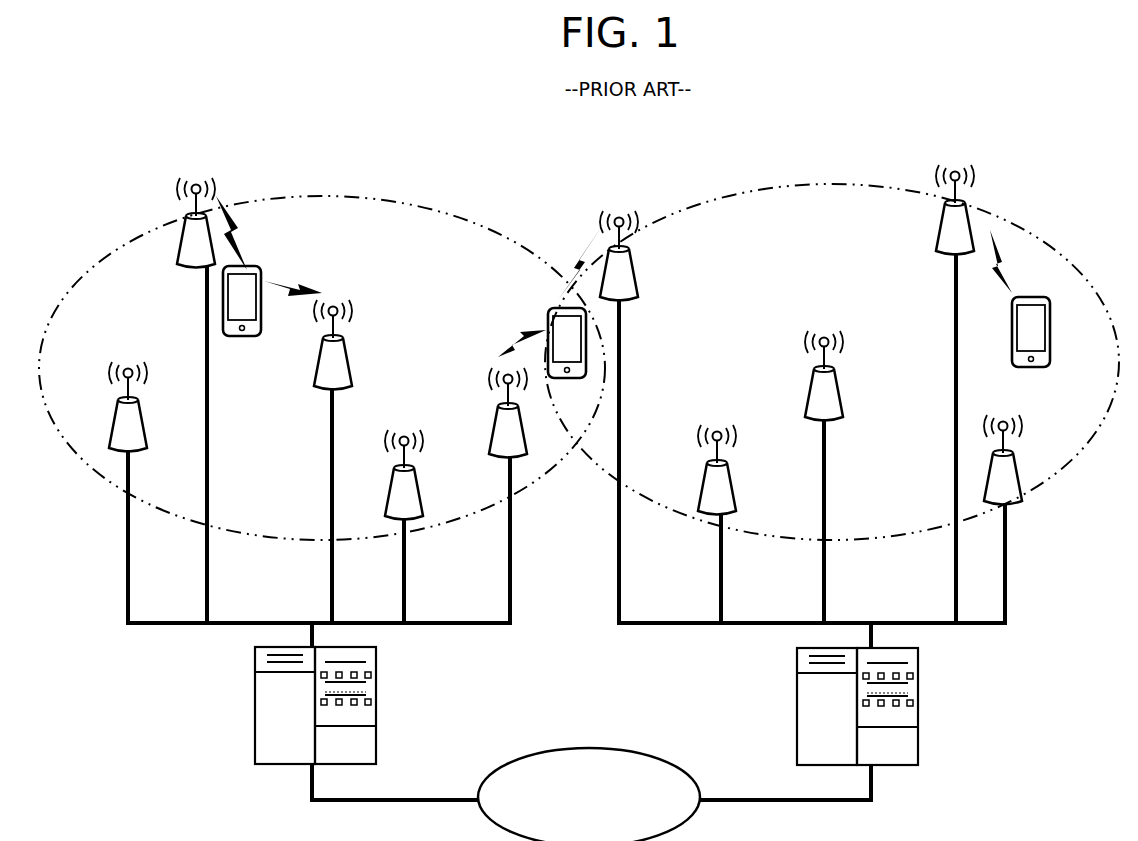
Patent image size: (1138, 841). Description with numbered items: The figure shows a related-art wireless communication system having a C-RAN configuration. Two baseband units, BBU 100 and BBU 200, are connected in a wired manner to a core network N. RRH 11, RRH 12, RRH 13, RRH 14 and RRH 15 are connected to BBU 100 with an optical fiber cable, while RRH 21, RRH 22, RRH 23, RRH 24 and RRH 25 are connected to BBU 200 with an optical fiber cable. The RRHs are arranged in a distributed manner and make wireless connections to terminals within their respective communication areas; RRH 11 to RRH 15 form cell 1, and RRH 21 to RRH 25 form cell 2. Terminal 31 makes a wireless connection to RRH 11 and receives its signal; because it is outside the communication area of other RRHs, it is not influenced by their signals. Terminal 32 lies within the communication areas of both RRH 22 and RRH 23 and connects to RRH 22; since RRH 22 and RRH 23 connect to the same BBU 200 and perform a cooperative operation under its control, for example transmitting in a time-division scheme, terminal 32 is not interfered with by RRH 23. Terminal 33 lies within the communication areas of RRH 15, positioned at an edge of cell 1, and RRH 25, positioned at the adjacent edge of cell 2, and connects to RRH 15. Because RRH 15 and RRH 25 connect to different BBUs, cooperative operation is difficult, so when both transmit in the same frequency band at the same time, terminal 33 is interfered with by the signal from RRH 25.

The cell 1 is at (1072, 259).
The cell 2 is at (398, 198).
The RRH 11 is at (974, 203).
The RRH 12 is at (1018, 457).
The RRH 13 is at (841, 377).
The RRH 14 is at (732, 471).
The RRH 15 is at (640, 271).
The RRH 21 is at (116, 412).
The RRH 22 is at (180, 257).
The RRH 23 is at (347, 348).
The RRH 24 is at (386, 483).
The RRH 25 is at (492, 420).
The terminal 31 is at (1048, 348).
The terminal 32 is at (247, 334).
The terminal 33 is at (546, 320).
The BBU 100 is at (920, 713).
The BBU 200 is at (377, 711).
The core network N is at (637, 750).